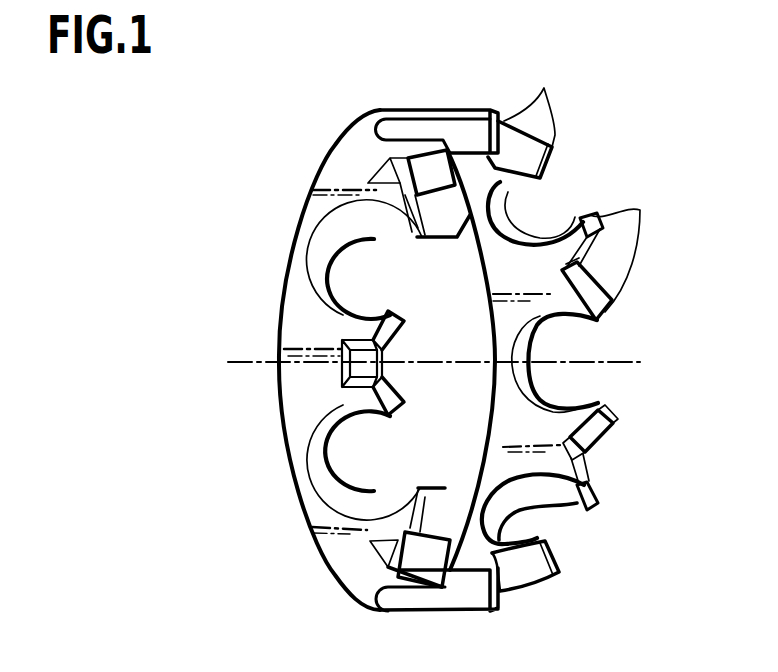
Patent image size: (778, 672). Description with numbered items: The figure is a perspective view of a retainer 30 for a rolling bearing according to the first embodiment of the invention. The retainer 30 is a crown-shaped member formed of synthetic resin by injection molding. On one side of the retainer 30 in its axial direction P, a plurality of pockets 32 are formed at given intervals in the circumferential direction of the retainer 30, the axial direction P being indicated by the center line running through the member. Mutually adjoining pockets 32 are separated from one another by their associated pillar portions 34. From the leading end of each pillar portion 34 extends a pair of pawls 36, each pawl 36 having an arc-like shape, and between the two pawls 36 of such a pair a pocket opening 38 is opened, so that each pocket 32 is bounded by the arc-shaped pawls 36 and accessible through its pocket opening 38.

The retainer 30 is at (414, 99).
The pocket 32 is at (336, 268).
The pillar portion 34 is at (337, 147).
The pawl 36 is at (543, 88).
The pocket opening 38 is at (376, 238).
The axial direction P is at (593, 361).